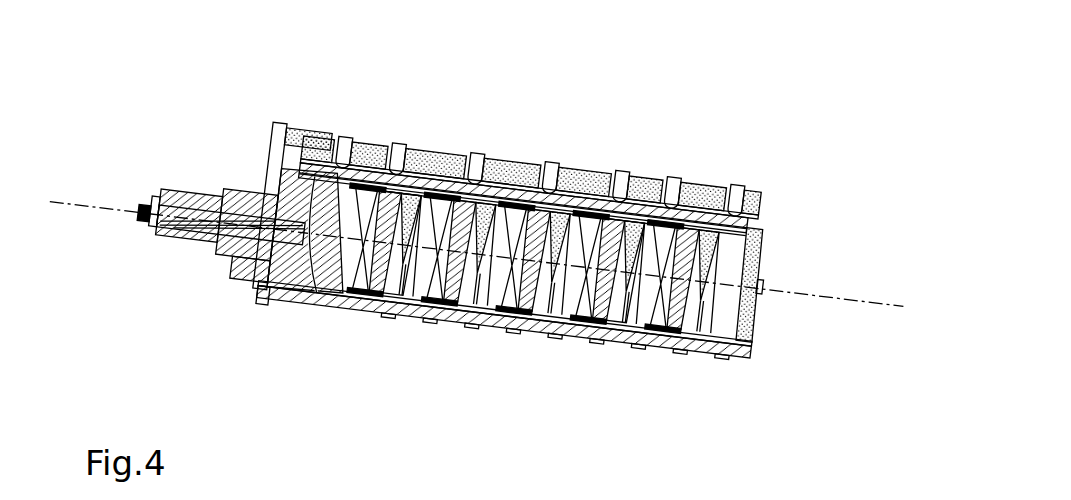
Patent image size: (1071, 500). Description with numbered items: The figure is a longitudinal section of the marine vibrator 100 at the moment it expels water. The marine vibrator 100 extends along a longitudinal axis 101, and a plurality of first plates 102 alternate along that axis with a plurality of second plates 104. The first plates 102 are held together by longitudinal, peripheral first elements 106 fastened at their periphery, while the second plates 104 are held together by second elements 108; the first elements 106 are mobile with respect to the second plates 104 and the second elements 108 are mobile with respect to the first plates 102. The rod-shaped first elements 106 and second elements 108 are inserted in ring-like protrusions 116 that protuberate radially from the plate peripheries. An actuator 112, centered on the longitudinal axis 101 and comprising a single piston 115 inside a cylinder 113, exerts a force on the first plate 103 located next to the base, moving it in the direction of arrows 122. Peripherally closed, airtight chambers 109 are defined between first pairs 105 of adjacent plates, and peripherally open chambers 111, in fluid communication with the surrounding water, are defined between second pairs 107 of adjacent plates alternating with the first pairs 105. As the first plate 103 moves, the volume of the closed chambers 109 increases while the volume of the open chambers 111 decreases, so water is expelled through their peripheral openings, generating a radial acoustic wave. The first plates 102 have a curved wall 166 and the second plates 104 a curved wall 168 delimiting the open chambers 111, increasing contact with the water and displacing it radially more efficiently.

The marine vibrator 100 is at (207, 327).
The longitudinal axis 101 is at (102, 202).
The first plates 102 is at (425, 160).
The first plate located next to the base 103 is at (295, 300).
The second plates 104 is at (455, 185).
The first pairs of adjacent plates 105 is at (565, 50).
The first elements 106 is at (752, 265).
The second pairs of adjacent plates 107 is at (600, 438).
The second elements 108 is at (763, 198).
The peripherally closed chambers 109 is at (530, 160).
The peripherally open chambers 111 is at (652, 200).
The actuator 112 is at (212, 165).
The cylinder 113 is at (187, 187).
The piston 115 is at (250, 187).
The ring-like protrusions 116 is at (555, 406).
The arrows 122 is at (283, 190).
The wall of the first plates 166 is at (416, 215).
The wall of the second plates 168 is at (388, 165).